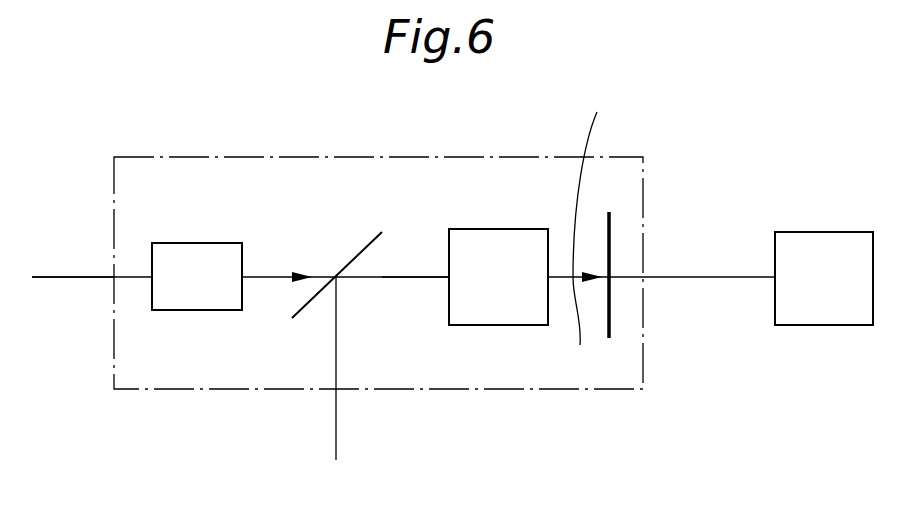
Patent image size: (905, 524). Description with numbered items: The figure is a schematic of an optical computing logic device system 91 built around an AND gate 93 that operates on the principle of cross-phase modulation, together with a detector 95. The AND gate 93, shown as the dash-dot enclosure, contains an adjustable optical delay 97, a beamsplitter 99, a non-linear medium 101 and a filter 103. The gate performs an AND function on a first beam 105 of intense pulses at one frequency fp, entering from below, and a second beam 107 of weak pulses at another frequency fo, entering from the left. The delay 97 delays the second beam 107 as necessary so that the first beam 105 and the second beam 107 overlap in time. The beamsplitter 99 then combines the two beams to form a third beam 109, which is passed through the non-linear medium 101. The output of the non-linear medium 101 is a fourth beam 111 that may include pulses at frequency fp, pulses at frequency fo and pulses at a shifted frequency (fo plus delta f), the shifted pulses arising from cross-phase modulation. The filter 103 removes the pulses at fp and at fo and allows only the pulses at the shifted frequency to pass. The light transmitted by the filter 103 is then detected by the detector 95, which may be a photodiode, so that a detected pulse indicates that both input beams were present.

The optical computing logic device system 91 is at (451, 287).
The AND gate 93 is at (389, 148).
The detector 95 is at (830, 326).
The adjustable optical delay 97 is at (222, 243).
The beamsplitter 99 is at (360, 248).
The non-linear medium 101 is at (505, 229).
The filter 103 is at (609, 223).
The first beam 105 is at (336, 443).
The second beam 107 is at (74, 275).
The third beam 109 is at (404, 278).
The fourth beam 111 is at (591, 244).